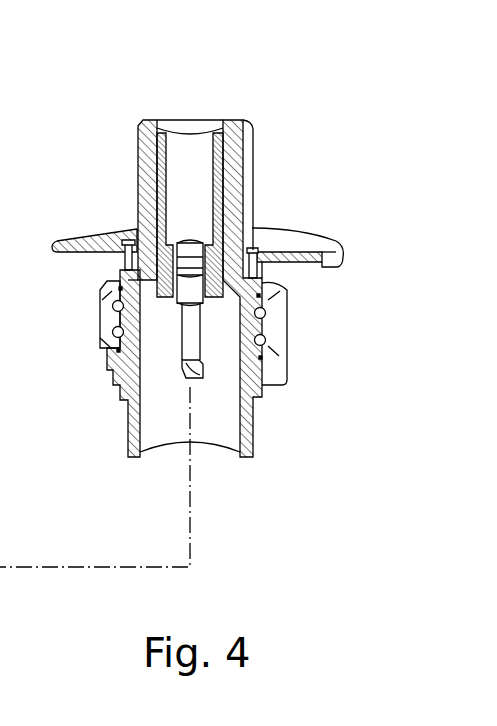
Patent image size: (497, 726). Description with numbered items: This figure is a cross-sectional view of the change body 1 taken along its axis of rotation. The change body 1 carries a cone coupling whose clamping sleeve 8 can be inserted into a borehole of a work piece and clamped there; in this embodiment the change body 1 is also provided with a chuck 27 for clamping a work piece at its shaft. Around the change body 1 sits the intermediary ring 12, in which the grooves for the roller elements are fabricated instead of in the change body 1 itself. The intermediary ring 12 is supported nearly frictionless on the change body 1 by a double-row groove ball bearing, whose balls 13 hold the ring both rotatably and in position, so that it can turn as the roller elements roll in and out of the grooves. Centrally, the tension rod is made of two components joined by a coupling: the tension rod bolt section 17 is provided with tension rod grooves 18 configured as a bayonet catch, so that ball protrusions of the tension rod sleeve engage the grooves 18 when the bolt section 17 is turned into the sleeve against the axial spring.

The change body 1 is at (318, 214).
The clamping sleeve 8 is at (236, 180).
The intermediary ring 12 is at (277, 327).
The balls 13 is at (117, 305).
The tension rod bolt section 17 is at (183, 353).
The tension rod groove 18 is at (192, 374).
The chuck 27 is at (217, 158).